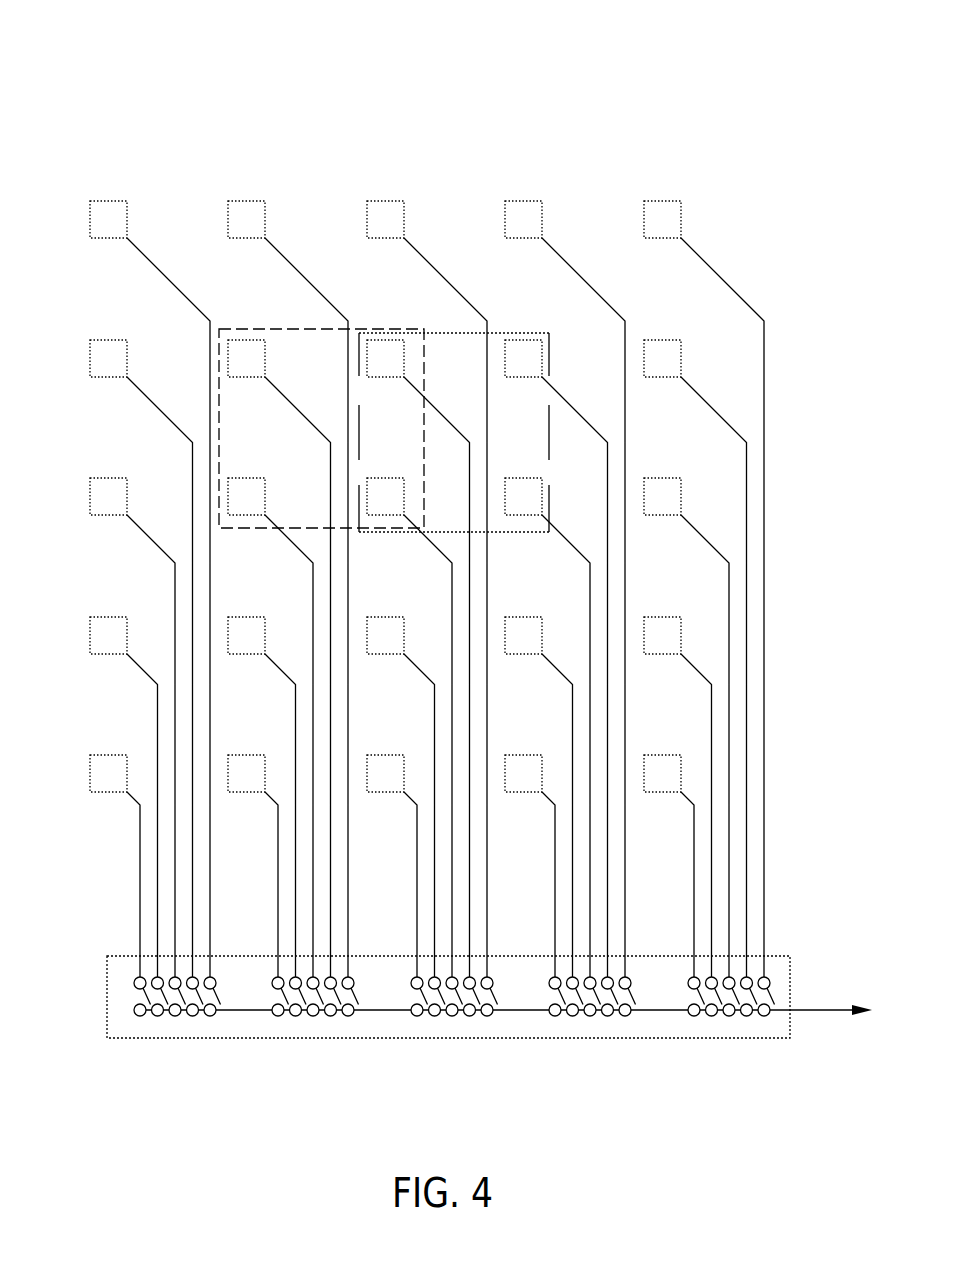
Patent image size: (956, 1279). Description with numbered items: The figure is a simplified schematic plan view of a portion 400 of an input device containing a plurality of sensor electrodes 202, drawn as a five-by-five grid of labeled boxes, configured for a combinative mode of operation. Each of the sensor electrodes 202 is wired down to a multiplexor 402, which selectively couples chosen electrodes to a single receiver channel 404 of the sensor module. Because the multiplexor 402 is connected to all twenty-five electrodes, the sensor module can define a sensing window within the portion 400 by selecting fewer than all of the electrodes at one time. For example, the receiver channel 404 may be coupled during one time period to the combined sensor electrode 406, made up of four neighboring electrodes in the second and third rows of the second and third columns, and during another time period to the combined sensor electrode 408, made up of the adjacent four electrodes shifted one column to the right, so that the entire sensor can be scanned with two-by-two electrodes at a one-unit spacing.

The portion of the input device 400 is at (176, 52).
The sensor electrodes 202 is at (90, 360).
The multiplexor 402 is at (107, 1000).
The receiver channel 404 is at (820, 1013).
The combined sensor electrode 406 is at (244, 328).
The combined sensor electrode 408 is at (519, 333).